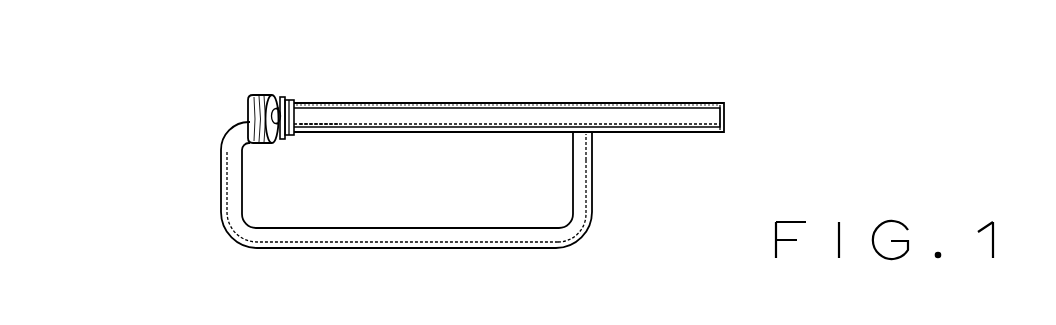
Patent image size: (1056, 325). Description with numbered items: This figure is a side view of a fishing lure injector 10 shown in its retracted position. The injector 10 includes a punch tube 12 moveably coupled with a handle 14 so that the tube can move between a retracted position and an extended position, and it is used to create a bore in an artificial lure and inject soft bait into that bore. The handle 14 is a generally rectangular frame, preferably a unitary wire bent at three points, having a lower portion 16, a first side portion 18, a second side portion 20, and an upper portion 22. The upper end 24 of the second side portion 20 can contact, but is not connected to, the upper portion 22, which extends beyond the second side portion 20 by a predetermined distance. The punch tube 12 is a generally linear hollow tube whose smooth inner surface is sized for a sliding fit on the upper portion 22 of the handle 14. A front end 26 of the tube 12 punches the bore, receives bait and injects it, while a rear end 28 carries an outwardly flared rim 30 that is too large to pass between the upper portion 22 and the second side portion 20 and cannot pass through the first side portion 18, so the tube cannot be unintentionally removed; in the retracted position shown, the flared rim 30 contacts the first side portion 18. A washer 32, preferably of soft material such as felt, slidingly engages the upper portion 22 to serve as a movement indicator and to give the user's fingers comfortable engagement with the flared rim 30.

The fishing lure injector 10 is at (217, 108).
The punch tube 12 is at (509, 119).
The handle 14 is at (396, 207).
The lower portion 16 is at (497, 240).
The first side portion 18 is at (230, 178).
The second side portion 20 is at (582, 200).
The upper portion 22 is at (283, 97).
The upper end 24 is at (580, 145).
The front end 26 is at (718, 108).
The rear end 28 is at (338, 122).
The flared rim 30 is at (291, 100).
The washer 32 is at (257, 96).